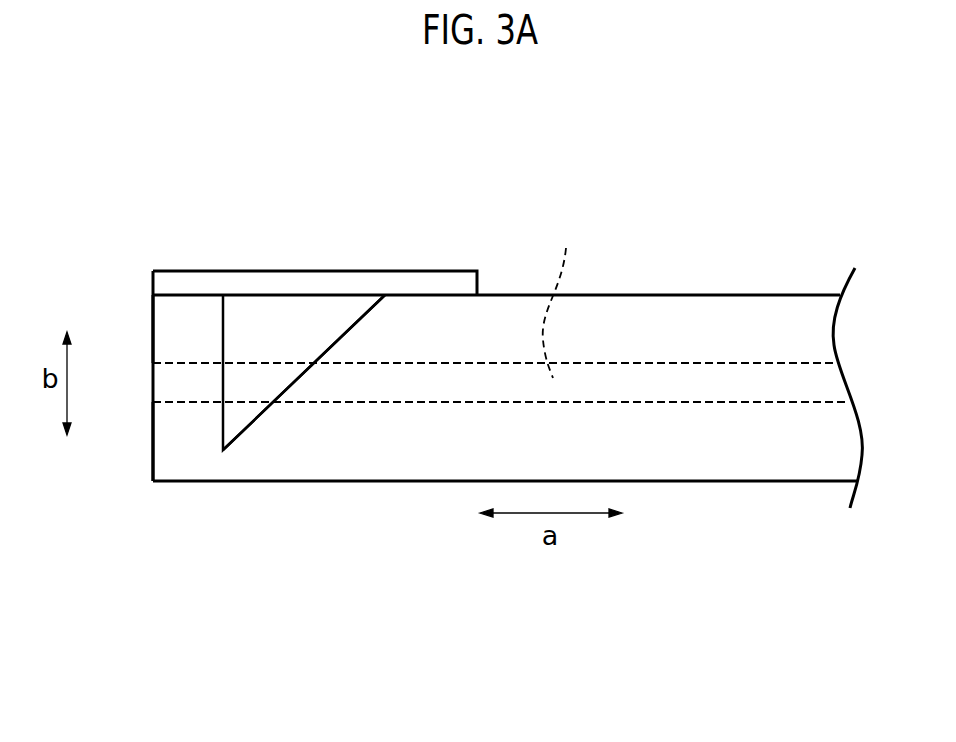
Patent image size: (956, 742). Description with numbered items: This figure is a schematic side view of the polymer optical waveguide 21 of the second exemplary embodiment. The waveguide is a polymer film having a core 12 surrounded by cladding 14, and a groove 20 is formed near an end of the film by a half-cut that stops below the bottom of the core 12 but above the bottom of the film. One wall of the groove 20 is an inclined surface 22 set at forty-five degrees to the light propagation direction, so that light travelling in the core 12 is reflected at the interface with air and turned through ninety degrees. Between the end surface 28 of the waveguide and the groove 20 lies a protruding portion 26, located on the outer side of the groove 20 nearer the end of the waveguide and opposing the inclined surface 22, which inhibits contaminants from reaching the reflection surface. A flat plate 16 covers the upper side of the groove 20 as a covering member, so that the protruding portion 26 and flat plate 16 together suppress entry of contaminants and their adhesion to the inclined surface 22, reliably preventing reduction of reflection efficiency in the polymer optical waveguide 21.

The core 12 is at (560, 296).
The cladding 14 is at (726, 308).
The flat plate 16 is at (409, 283).
The groove 20 is at (280, 325).
The polymer optical waveguide 21 is at (648, 242).
The inclined surface 22 is at (348, 322).
The protruding portion 26 is at (167, 332).
The end surface 28 is at (152, 445).